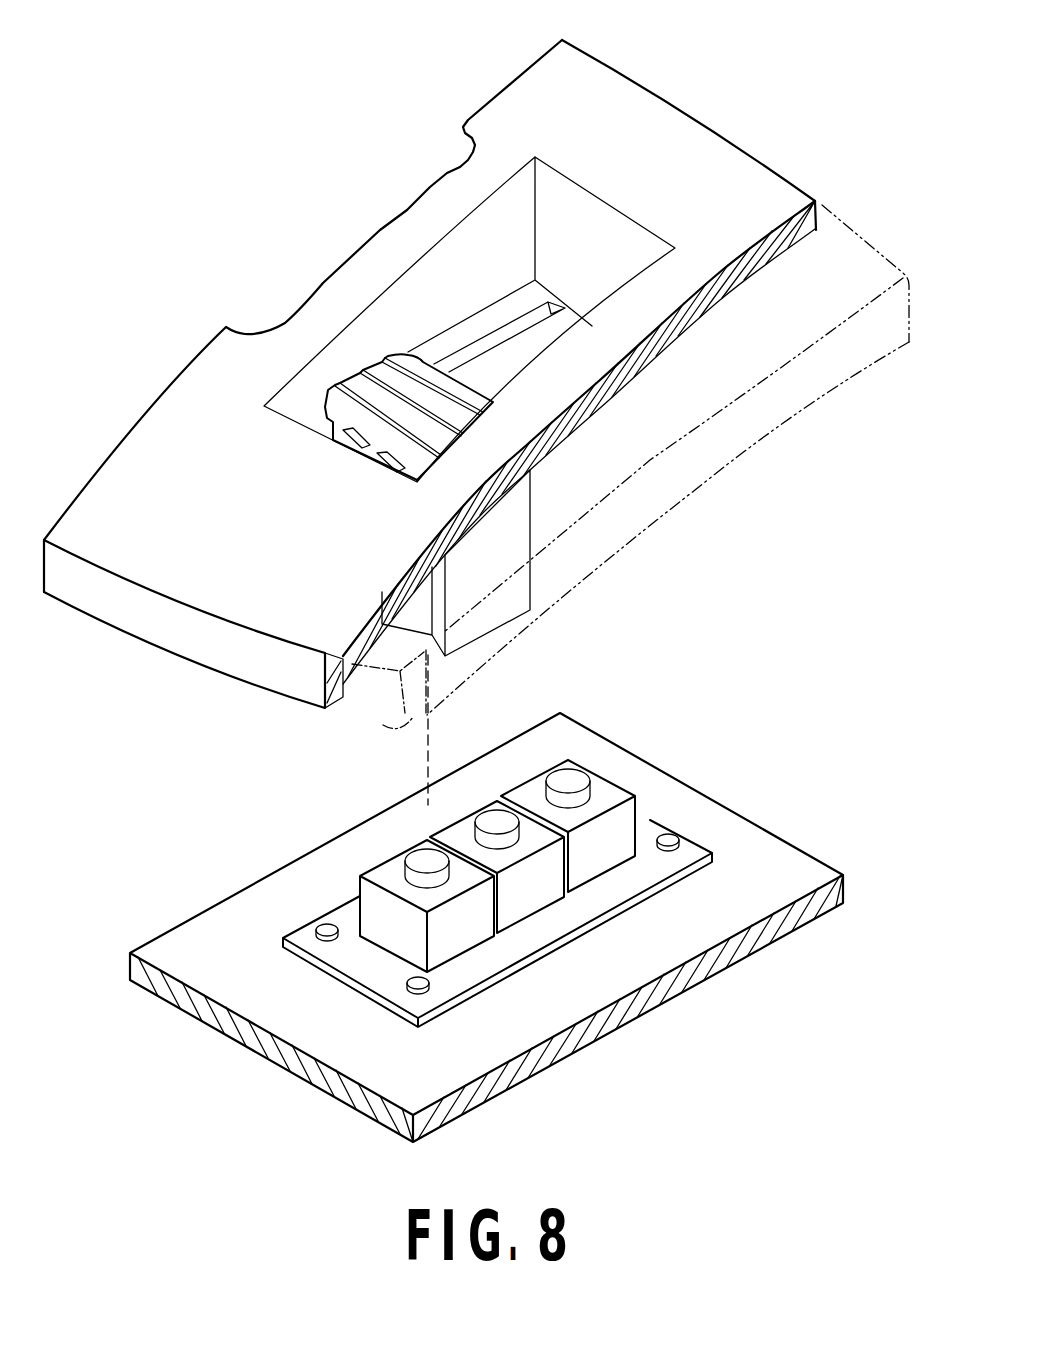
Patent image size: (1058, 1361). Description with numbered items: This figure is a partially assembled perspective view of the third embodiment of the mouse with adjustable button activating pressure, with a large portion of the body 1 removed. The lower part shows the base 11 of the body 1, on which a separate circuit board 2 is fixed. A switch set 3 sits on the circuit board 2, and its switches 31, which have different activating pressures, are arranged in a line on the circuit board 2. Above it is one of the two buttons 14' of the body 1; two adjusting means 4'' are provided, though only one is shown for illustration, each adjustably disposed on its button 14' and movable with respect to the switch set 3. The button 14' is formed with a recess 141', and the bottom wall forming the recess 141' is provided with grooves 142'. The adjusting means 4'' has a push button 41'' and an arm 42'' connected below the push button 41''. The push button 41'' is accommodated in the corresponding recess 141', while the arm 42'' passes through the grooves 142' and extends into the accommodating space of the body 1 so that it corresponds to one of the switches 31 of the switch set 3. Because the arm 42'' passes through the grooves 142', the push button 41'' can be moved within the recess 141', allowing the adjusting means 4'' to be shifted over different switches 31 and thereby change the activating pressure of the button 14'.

The button 14' is at (476, 408).
The recess 141' is at (469, 319).
The grooves 142' is at (559, 260).
The adjusting means 4'' is at (365, 317).
The push button 41'' is at (327, 355).
The arm 42'' is at (547, 563).
The body 1 is at (468, 933).
The base 11 is at (531, 1071).
The circuit board 2 is at (663, 830).
The switch set 3 is at (549, 910).
The switches 31 is at (597, 852).